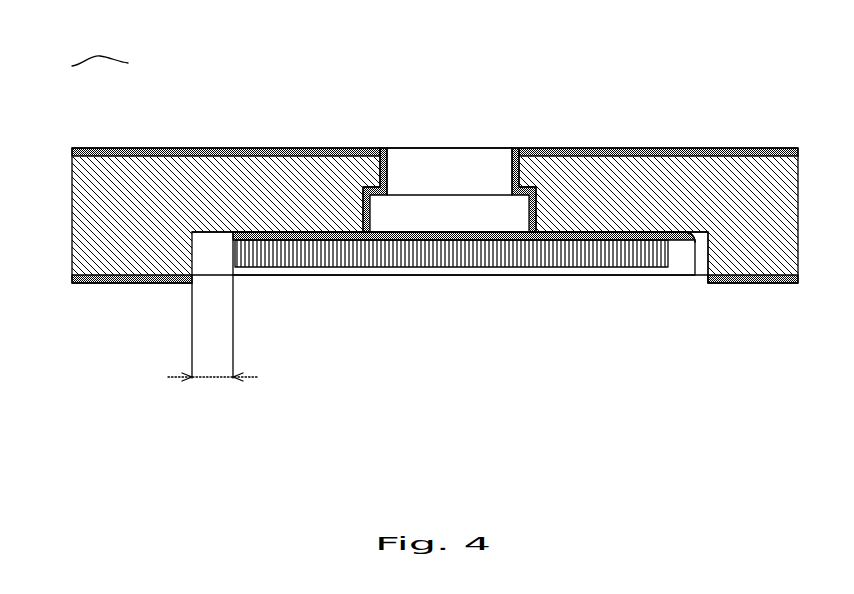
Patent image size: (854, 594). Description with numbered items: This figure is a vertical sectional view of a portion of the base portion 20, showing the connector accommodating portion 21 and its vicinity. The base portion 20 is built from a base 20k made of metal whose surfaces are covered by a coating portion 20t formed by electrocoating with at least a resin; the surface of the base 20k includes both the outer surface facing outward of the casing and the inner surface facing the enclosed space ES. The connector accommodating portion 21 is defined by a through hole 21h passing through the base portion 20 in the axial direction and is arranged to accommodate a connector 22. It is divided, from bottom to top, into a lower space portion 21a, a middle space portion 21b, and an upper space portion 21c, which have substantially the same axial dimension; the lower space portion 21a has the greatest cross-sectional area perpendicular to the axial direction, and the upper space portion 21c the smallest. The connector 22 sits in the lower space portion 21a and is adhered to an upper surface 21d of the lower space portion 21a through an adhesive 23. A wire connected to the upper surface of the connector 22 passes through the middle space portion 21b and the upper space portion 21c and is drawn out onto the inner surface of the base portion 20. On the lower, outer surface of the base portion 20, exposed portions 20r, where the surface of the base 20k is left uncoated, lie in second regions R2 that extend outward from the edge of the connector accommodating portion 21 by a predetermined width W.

The enclosed space ES is at (84, 66).
The base portion 20 is at (439, 229).
The coating portion 20t is at (288, 148).
The base 20k is at (718, 190).
The exposed portions 20r is at (697, 237).
The connector accommodating portion 21 is at (464, 209).
The lower space portion 21a is at (500, 276).
The middle space portion 21b is at (402, 230).
The upper space portion 21c is at (455, 185).
The through hole 21h is at (493, 175).
The upper surface of the lower space portion 21d is at (290, 241).
The connector 22 is at (427, 275).
The adhesive 23 is at (366, 241).
The second regions R2 is at (682, 241).
The predetermined width W is at (209, 328).